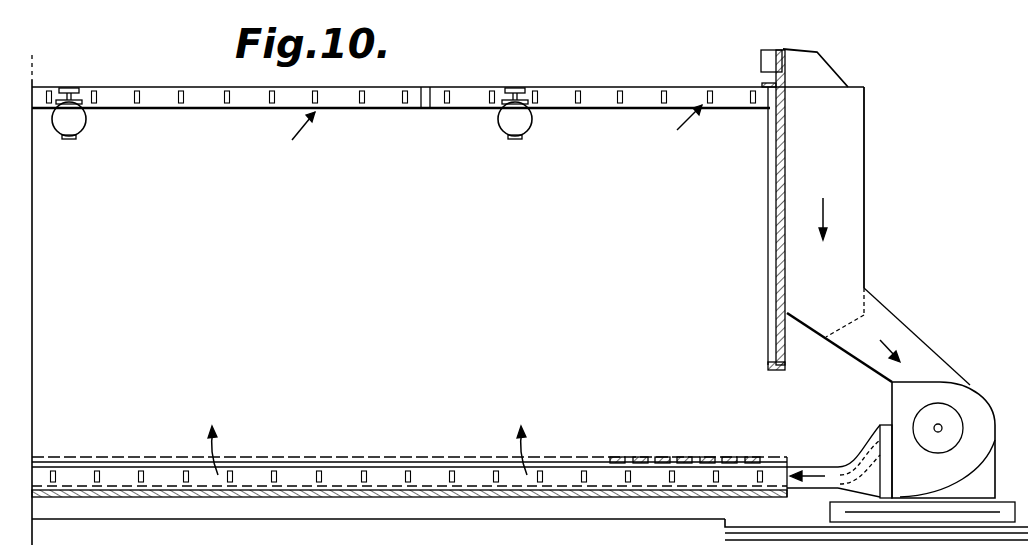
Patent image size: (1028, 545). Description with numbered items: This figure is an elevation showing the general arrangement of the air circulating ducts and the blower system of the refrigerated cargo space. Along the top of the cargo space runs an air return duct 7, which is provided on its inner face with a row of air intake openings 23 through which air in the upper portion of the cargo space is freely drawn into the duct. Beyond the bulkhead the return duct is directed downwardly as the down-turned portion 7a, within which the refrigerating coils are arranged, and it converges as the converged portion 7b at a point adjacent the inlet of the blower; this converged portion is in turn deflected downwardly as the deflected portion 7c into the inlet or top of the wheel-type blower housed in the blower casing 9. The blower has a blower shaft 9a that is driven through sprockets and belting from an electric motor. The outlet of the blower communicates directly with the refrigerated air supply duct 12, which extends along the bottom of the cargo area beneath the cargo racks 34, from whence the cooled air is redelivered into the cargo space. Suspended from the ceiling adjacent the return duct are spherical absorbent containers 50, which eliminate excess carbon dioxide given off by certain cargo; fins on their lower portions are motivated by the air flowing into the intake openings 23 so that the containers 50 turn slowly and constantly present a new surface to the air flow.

The air return duct 7 is at (470, 97).
The down-turned portion of return duct 7a is at (841, 161).
The converged portion of return duct 7b is at (846, 255).
The deflected portion of return duct 7c is at (901, 344).
The blower casing 9 is at (980, 492).
The blower shaft 9a is at (941, 425).
The refrigerated air supply duct 12 is at (422, 471).
The air intake opening 23 is at (220, 102).
The cargo rack 34 is at (704, 456).
The absorbent container 50 is at (78, 120).